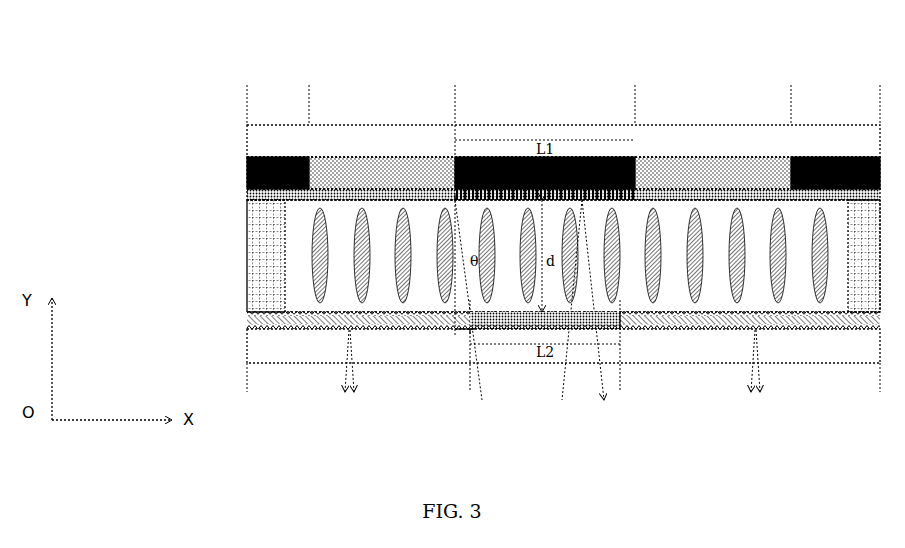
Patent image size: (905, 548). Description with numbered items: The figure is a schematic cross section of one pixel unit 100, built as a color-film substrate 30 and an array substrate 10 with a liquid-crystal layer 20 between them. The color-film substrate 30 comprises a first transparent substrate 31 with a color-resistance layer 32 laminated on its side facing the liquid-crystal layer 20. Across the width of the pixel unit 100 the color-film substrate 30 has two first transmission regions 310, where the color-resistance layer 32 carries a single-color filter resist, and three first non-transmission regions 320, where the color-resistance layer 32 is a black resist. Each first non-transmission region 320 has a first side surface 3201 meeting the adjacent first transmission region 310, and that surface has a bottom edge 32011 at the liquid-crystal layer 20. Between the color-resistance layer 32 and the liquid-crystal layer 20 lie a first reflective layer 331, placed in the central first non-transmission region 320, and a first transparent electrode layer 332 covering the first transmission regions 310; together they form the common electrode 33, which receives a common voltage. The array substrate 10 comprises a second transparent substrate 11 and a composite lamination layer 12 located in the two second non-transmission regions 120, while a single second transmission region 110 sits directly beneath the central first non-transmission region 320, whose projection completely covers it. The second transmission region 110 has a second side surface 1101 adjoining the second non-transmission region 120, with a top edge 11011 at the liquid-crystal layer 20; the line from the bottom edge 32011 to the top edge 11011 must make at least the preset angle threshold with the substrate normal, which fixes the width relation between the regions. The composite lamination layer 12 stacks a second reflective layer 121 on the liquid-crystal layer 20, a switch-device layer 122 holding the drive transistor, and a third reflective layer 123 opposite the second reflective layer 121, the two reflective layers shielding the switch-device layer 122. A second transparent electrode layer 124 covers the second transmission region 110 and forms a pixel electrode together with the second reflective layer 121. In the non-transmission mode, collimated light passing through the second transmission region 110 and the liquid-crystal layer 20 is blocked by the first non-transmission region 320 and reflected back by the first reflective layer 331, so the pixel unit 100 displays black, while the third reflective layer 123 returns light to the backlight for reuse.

The pixel unit 100 is at (150, 25).
The color-film substrate 30 is at (165, 141).
The first transparent substrate 31 is at (247, 148).
The color-resistance layer 32 is at (247, 176).
The common electrode 33 is at (247, 197).
The first non-transmission region 320 is at (292, 128).
The first transmission region 310 is at (350, 128).
The first side surface 3201 is at (456, 188).
The bottom edge 32011 is at (455, 200).
The first reflective layer 331 is at (637, 193).
The first transparent electrode layer 332 is at (367, 172).
The liquid-crystal layer 20 is at (247, 262).
The array substrate 10 is at (120, 311).
The second transparent substrate 11 is at (247, 345).
The composite lamination layer 12 is at (165, 281).
The second reflective layer 121 is at (247, 312).
The switch-device layer 122 is at (247, 320).
The third reflective layer 123 is at (247, 327).
The second transmission region 110 is at (562, 378).
The second side surface 1101 is at (460, 335).
The top edge 11011 is at (492, 332).
The second transparent electrode layer 124 is at (616, 330).
The second non-transmission region 120 is at (406, 372).